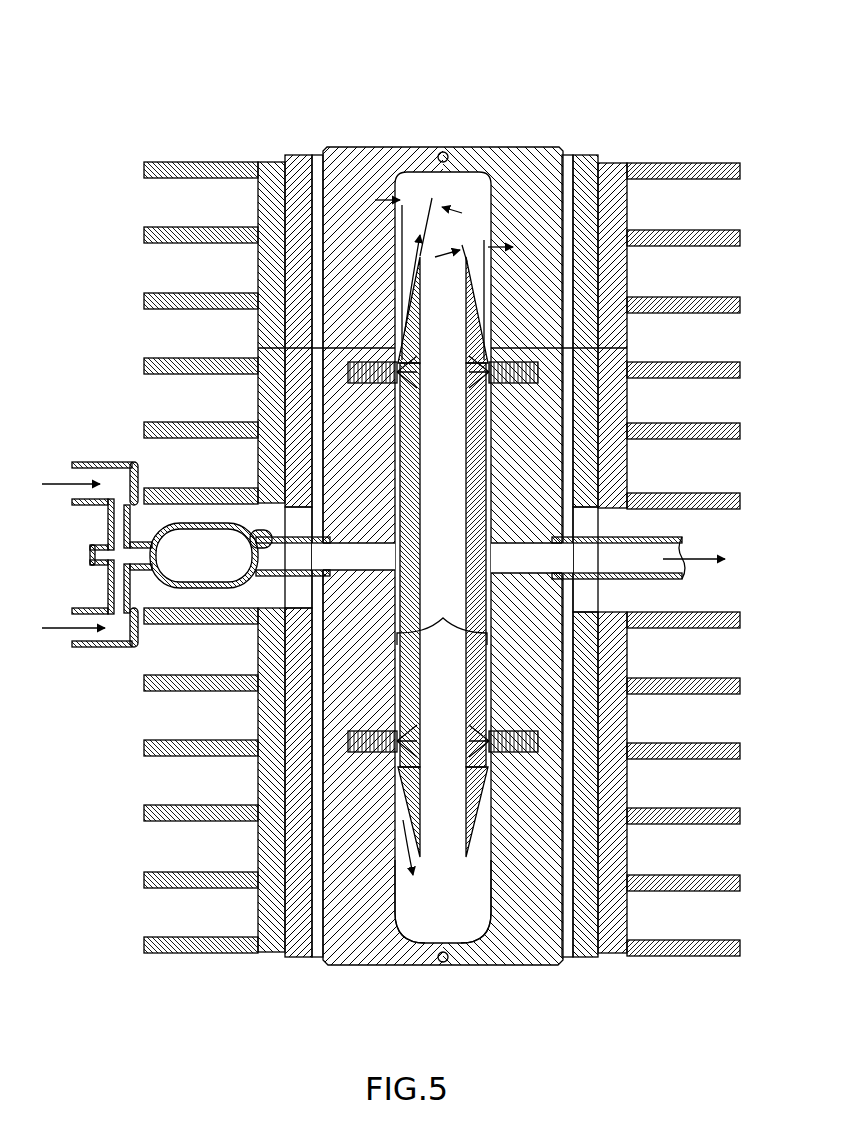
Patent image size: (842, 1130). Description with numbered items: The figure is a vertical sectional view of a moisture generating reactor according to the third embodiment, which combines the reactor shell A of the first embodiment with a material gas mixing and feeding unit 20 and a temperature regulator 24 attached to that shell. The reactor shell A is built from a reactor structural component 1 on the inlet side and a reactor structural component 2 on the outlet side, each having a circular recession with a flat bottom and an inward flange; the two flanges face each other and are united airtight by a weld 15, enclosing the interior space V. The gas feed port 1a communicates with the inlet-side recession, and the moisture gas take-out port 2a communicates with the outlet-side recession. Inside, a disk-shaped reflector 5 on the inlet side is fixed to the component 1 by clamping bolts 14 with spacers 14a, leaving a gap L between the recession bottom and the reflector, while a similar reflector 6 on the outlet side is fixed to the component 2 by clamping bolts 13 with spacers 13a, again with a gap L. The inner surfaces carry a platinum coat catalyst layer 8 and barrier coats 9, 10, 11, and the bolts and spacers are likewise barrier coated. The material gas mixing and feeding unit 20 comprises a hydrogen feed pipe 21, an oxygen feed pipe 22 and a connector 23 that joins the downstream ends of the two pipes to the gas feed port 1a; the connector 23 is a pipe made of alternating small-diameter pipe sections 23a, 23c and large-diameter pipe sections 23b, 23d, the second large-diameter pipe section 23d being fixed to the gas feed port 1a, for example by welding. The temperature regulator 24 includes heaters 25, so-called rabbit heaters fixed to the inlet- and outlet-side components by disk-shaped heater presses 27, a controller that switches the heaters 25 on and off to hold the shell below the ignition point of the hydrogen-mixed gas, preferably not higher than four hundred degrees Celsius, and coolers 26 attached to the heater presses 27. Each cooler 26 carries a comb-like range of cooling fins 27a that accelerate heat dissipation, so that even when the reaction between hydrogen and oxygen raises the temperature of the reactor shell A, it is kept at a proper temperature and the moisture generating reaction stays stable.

The reactor structural component on the inlet side 1 is at (350, 432).
The reactor structural component on the outlet side 2 is at (535, 432).
The gas feed port 1a is at (342, 552).
The moisture gas take-out port 2a is at (540, 562).
The reflector on the inlet side 5 is at (410, 465).
The reflector on the outlet side 6 is at (475, 532).
The platinum coat catalyst layer 8 is at (490, 893).
The barrier coat 9 is at (395, 893).
The barrier coat 10 is at (398, 735).
The barrier coat 11 is at (490, 735).
The clamping bolts 13 is at (492, 378).
The spacers 13a is at (489, 360).
The clamping bolts 14 is at (385, 372).
The spacers 14a is at (398, 350).
The weld 15 is at (442, 152).
The material gas mixing and feeding unit 20 is at (206, 546).
The hydrogen feed pipe 21 is at (95, 648).
The oxygen feed pipe 22 is at (108, 462).
The connector 23 is at (147, 556).
The small-diameter pipe section 23a is at (110, 523).
The large-diameter pipe section 23b is at (180, 588).
The small-diameter pipe section 23c is at (250, 552).
The second large-diameter pipe section 23d is at (258, 592).
The temperature regulator 24 is at (650, 120).
The heater 25 is at (318, 155).
The cooler 26 is at (172, 158).
The heater press 27 is at (293, 155).
The cooling fins 27a is at (144, 300).
The reactor shell A is at (500, 95).
The interior space V is at (425, 157).
The gap L is at (442, 619).